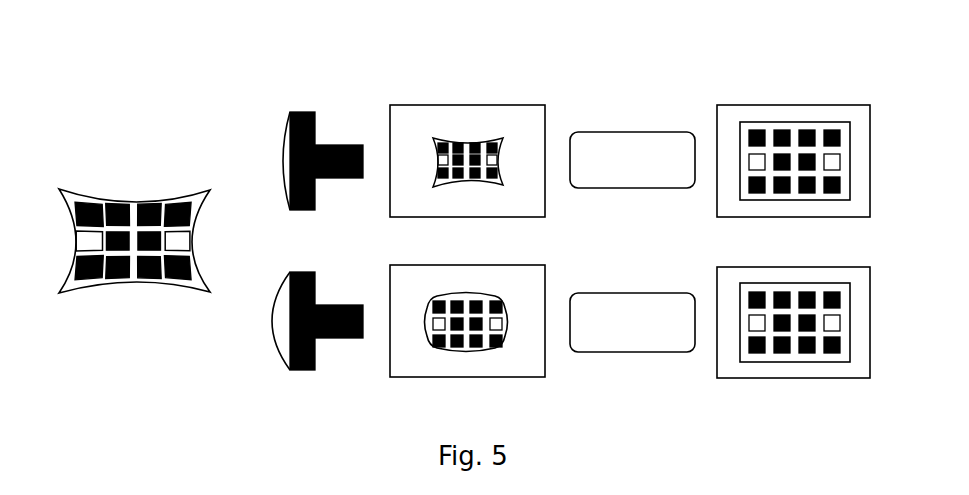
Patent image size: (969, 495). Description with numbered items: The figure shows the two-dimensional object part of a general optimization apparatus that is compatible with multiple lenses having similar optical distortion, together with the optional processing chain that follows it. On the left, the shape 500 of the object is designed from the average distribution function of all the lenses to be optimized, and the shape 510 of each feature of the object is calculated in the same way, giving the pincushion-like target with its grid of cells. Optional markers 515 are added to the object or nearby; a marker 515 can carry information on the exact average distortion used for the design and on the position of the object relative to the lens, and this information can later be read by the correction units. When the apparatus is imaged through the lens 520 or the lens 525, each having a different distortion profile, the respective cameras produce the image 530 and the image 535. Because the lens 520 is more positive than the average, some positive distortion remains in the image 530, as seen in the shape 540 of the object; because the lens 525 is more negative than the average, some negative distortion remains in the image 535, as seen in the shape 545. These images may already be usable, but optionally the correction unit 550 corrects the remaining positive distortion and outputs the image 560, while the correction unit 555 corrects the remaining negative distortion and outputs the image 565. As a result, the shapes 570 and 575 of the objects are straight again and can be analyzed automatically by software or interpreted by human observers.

The shape of the object 500 is at (134, 232).
The shape of each feature 510 is at (148, 276).
The marker 515 is at (165, 248).
The lens 520 is at (323, 161).
The lens 525 is at (317, 321).
The image 530 is at (467, 155).
The image 535 is at (467, 315).
The shape of the object 540 is at (468, 157).
The shape of the object 545 is at (466, 316).
The correction unit 550 is at (632, 153).
The correction unit 555 is at (632, 315).
The image 560 is at (793, 155).
The image 565 is at (793, 316).
The shape of the object 570 is at (795, 155).
The shape of the object 575 is at (795, 317).